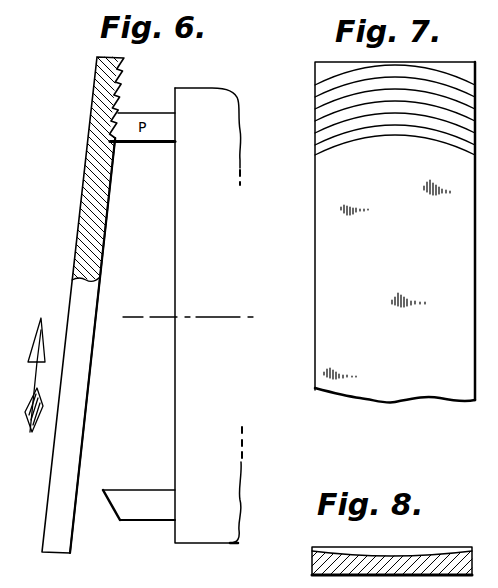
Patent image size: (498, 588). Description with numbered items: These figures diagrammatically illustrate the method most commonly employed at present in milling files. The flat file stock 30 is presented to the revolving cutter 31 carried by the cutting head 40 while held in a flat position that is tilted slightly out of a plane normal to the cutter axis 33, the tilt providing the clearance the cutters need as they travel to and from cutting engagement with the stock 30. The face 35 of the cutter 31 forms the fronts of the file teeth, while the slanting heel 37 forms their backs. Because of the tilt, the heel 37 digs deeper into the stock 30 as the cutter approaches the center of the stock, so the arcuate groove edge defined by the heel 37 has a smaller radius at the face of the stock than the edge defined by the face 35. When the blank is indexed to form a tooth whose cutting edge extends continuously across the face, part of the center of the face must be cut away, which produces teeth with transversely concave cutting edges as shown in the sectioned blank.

In FIG. 6, the file stock 30 is at (84, 394).
In FIG. 7, the file stock 30 is at (337, 173).
In FIG. 8, the file stock 30 is at (310, 570).
In FIG. 6, the revolving cutter 31 is at (152, 118).
In FIG. 6, the cutter axis 33 is at (207, 317).
In FIG. 6, the face of the cutter 35 is at (147, 145).
In FIG. 6, the slanting heel of the cutter 37 is at (136, 128).
In FIG. 6, the cutting head 40 is at (221, 106).